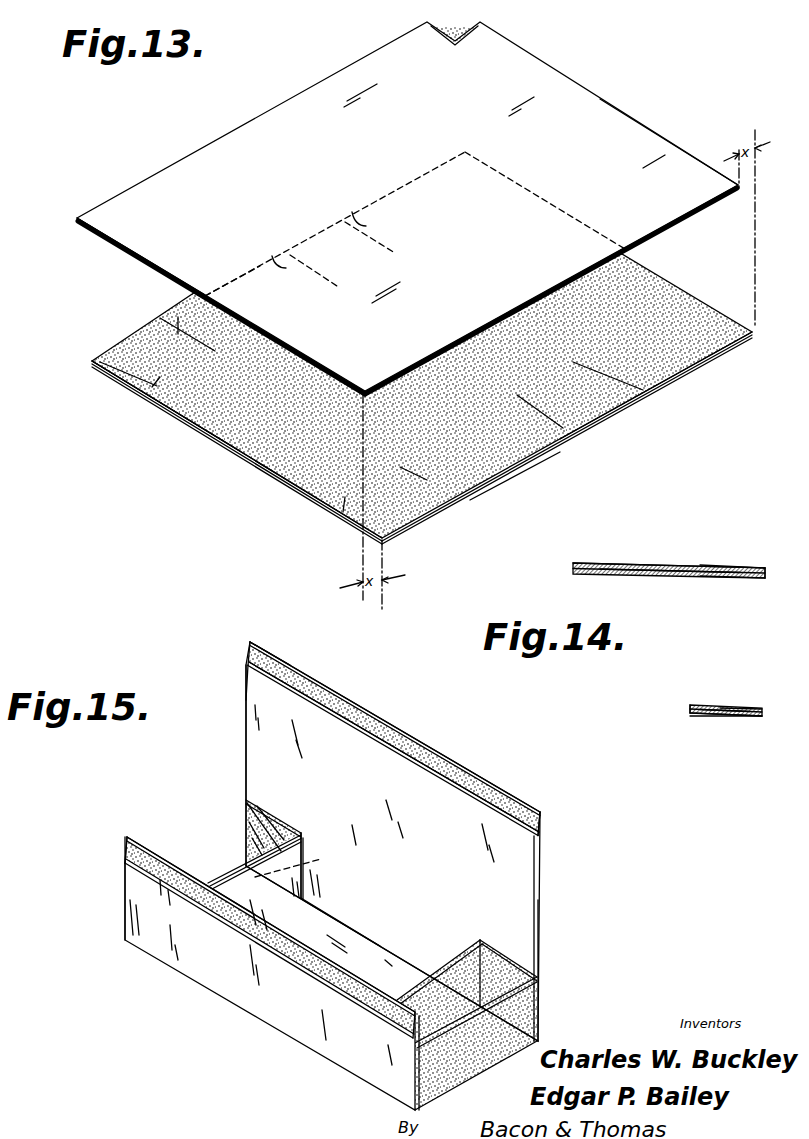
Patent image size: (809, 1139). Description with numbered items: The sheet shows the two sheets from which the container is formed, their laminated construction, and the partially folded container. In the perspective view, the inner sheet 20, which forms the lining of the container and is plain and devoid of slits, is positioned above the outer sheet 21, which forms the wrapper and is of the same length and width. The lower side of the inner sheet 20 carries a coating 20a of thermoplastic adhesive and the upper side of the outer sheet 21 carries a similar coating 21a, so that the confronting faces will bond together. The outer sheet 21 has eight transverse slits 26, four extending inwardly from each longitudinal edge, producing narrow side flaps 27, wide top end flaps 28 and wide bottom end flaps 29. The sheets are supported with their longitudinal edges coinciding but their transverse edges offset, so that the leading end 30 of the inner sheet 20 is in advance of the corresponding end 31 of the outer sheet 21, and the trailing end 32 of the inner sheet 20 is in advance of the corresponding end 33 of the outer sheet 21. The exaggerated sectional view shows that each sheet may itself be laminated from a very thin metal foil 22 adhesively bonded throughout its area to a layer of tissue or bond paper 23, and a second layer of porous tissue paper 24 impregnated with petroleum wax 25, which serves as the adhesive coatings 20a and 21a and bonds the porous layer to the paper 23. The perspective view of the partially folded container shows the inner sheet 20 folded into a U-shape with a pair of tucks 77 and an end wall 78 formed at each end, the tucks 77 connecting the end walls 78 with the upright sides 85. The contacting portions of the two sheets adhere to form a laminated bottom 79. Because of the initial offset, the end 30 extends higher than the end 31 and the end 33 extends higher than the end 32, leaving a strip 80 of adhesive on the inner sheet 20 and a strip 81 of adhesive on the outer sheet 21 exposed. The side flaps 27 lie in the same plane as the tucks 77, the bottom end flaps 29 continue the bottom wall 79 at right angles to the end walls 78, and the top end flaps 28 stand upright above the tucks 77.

In FIG. 13, the inner sheet 20 is at (597, 101).
In FIG. 14, the inner sheet 20 is at (738, 563).
In FIG. 15, the inner sheet 20 is at (538, 886).
In FIG. 13, the adhesive coating of inner sheet 20a is at (478, 22).
In FIG. 14, the adhesive coating of inner sheet 20a is at (757, 578).
In FIG. 15, the adhesive coating of inner sheet 20a is at (126, 851).
In FIG. 13, the outer sheet 21 is at (676, 289).
In FIG. 14, the outer sheet 21 is at (700, 716).
In FIG. 15, the outer sheet 21 is at (512, 800).
In FIG. 13, the adhesive coating of outer sheet 21a is at (234, 455).
In FIG. 14, the adhesive coating of outer sheet 21a is at (693, 702).
In FIG. 15, the adhesive coating of outer sheet 21a is at (402, 737).
In FIG. 14, the metal foil layer 22 is at (660, 562).
In FIG. 14, the tissue or bond paper layer 23 is at (573, 567).
In FIG. 14, the porous tissue paper layer 24 is at (724, 578).
In FIG. 14, the petroleum wax 25 is at (663, 575).
In FIG. 13, the transverse slits 26 is at (358, 224).
In FIG. 15, the transverse slits 26 is at (270, 820).
In FIG. 13, the side flaps 27 is at (323, 242).
In FIG. 15, the side flaps 27 is at (252, 826).
In FIG. 13, the top end flaps 28 is at (429, 170).
In FIG. 15, the top end flaps 28 is at (247, 650).
In FIG. 13, the bottom end flaps 29 is at (237, 288).
In FIG. 15, the bottom end flaps 29 is at (228, 870).
In FIG. 13, the leading end of inner sheet 30 is at (120, 244).
In FIG. 15, the leading end of inner sheet 30 is at (137, 843).
In FIG. 13, the leading end of outer sheet 31 is at (192, 428).
In FIG. 15, the leading end of outer sheet 31 is at (125, 874).
In FIG. 13, the trailing end of inner sheet 32 is at (682, 149).
In FIG. 15, the trailing end of inner sheet 32 is at (268, 652).
In FIG. 13, the trailing end of outer sheet 33 is at (720, 314).
In FIG. 15, the trailing end of outer sheet 33 is at (258, 688).
In FIG. 15, the tucks 77 is at (256, 840).
In FIG. 15, the end walls 78 is at (304, 847).
In FIG. 15, the laminated bottom 79 is at (340, 930).
In FIG. 15, the exposed adhesive strip of inner sheet 80 is at (293, 957).
In FIG. 15, the exposed adhesive strip of outer sheet 81 is at (322, 686).
In FIG. 15, the sides of container 85 is at (263, 1010).